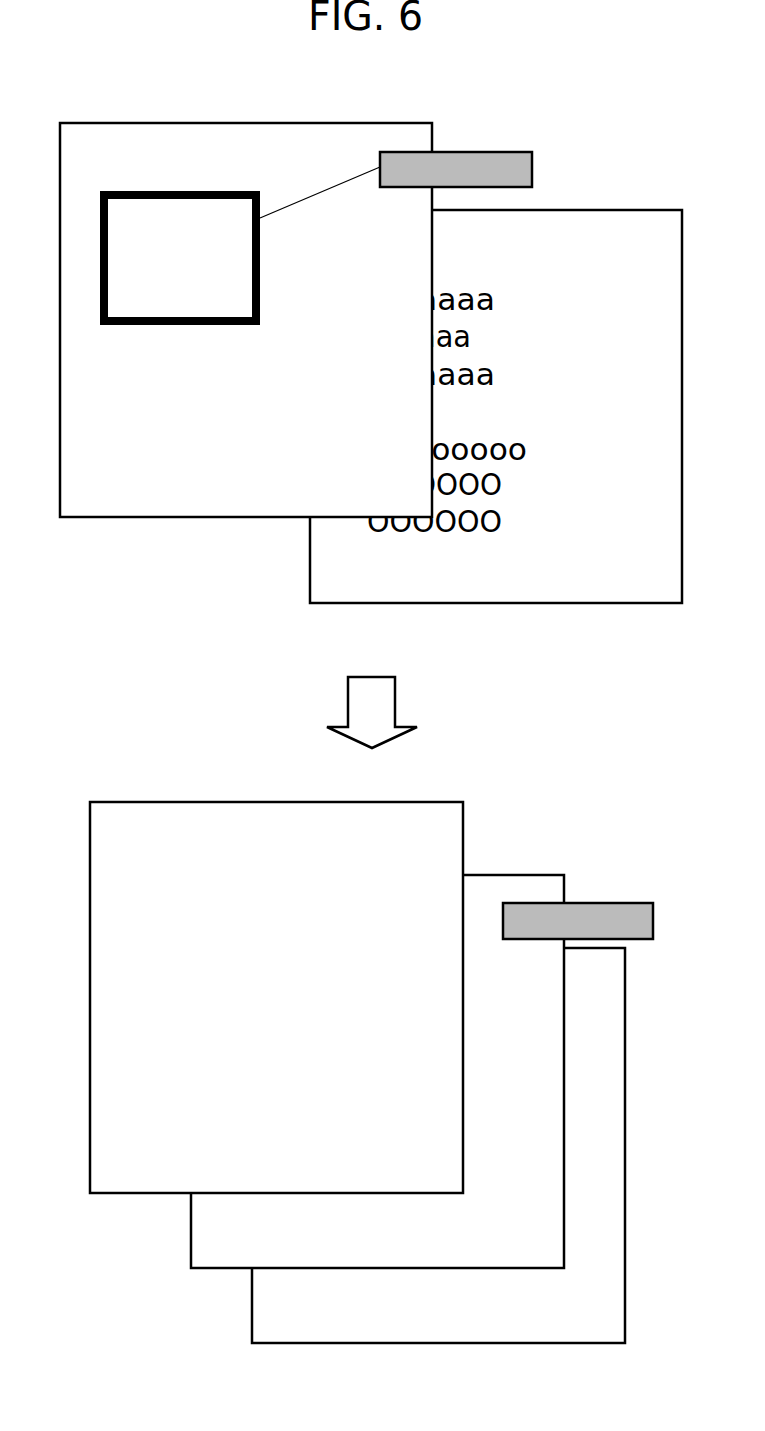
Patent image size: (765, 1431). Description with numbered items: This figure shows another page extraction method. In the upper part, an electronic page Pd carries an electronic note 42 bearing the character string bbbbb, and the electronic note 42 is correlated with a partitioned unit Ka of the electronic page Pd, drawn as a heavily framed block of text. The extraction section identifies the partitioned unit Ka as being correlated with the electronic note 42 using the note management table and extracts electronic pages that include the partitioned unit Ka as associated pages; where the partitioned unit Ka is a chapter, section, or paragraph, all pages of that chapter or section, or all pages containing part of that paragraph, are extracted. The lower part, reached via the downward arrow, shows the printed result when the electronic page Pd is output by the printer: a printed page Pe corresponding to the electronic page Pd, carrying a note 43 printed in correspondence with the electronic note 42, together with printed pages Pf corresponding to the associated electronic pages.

The electronic page Pd is at (350, 123).
The partitioned unit Ka is at (222, 191).
The electronic note 42 is at (505, 152).
The printed pages Pf is at (625, 1083).
The printed page Pe is at (523, 875).
The note 43 is at (633, 903).